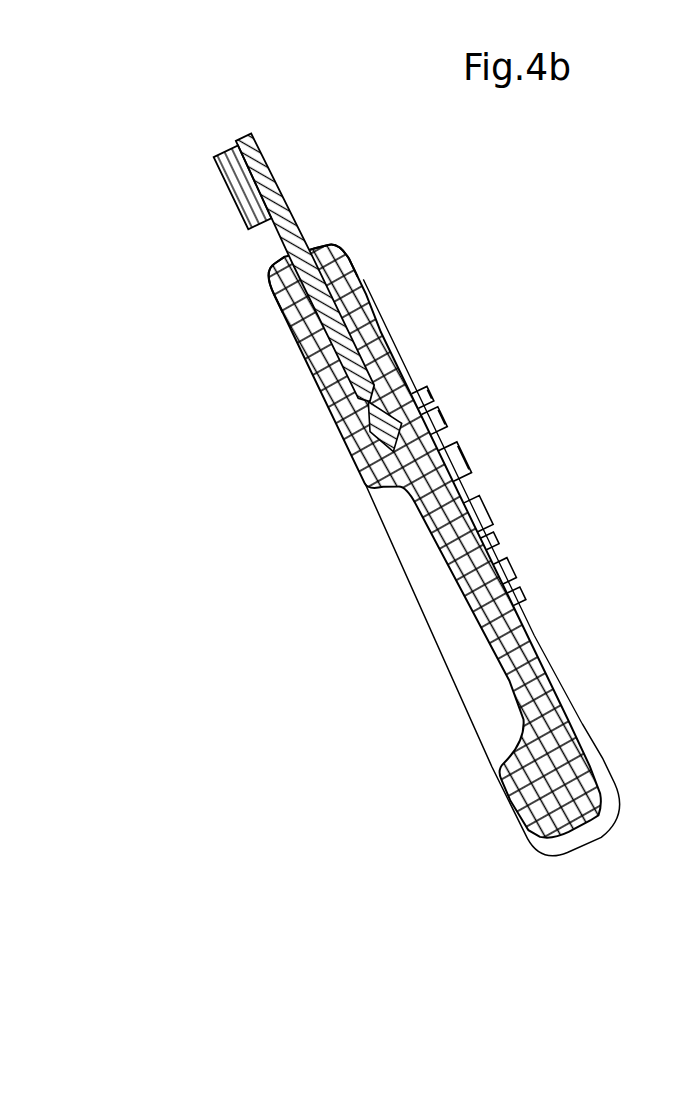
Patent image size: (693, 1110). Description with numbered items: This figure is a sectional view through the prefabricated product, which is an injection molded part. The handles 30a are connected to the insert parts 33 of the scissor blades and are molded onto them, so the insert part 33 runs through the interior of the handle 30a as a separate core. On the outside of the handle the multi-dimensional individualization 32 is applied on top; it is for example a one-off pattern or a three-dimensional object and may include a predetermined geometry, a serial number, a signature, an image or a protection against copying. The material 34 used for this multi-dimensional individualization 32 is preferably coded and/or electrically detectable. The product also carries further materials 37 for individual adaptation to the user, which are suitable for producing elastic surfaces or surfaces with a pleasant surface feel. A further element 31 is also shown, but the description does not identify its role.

The housing 30a is at (327, 390).
The rounded end portion 33 is at (353, 267).
The ledge 31 is at (523, 614).
The first engagement tabs 34 is at (445, 432).
The second engagement tabs 32 is at (478, 497).
The cover flange 37 is at (597, 757).